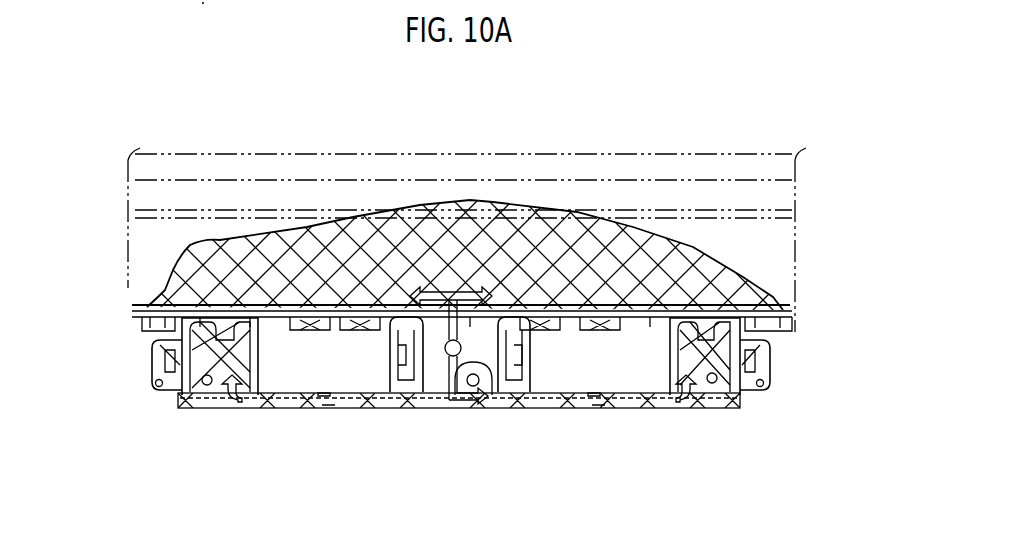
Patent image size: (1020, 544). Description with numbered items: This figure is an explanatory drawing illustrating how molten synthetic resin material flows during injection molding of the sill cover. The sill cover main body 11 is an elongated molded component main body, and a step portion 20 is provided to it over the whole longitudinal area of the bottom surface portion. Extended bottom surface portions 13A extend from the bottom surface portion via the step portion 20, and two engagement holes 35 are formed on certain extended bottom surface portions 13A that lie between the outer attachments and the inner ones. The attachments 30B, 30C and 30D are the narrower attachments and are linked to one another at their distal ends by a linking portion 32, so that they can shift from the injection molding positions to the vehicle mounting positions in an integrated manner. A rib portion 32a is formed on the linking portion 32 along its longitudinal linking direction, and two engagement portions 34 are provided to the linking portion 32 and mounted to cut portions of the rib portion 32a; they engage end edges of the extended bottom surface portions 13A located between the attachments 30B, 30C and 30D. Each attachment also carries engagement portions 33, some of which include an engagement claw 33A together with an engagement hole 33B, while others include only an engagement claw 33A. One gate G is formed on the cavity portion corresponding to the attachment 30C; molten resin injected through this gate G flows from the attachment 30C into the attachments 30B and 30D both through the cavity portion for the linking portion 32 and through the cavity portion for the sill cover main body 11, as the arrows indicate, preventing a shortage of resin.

The sill cover main body 11 is at (382, 153).
The extended bottom surface portion 13A is at (305, 318).
The step portion 20 is at (497, 303).
The engagement hole 35 is at (158, 329).
The engagement portion 33 is at (190, 385).
The engagement claw 33A is at (170, 364).
The engagement hole 33B is at (158, 390).
The attachment 30B is at (240, 398).
The attachment 30C is at (400, 396).
The attachment 30D is at (735, 398).
The linking portion 32 is at (275, 408).
The rib portion 32a is at (330, 398).
The engagement portion 34 is at (327, 400).
The gate G is at (455, 390).